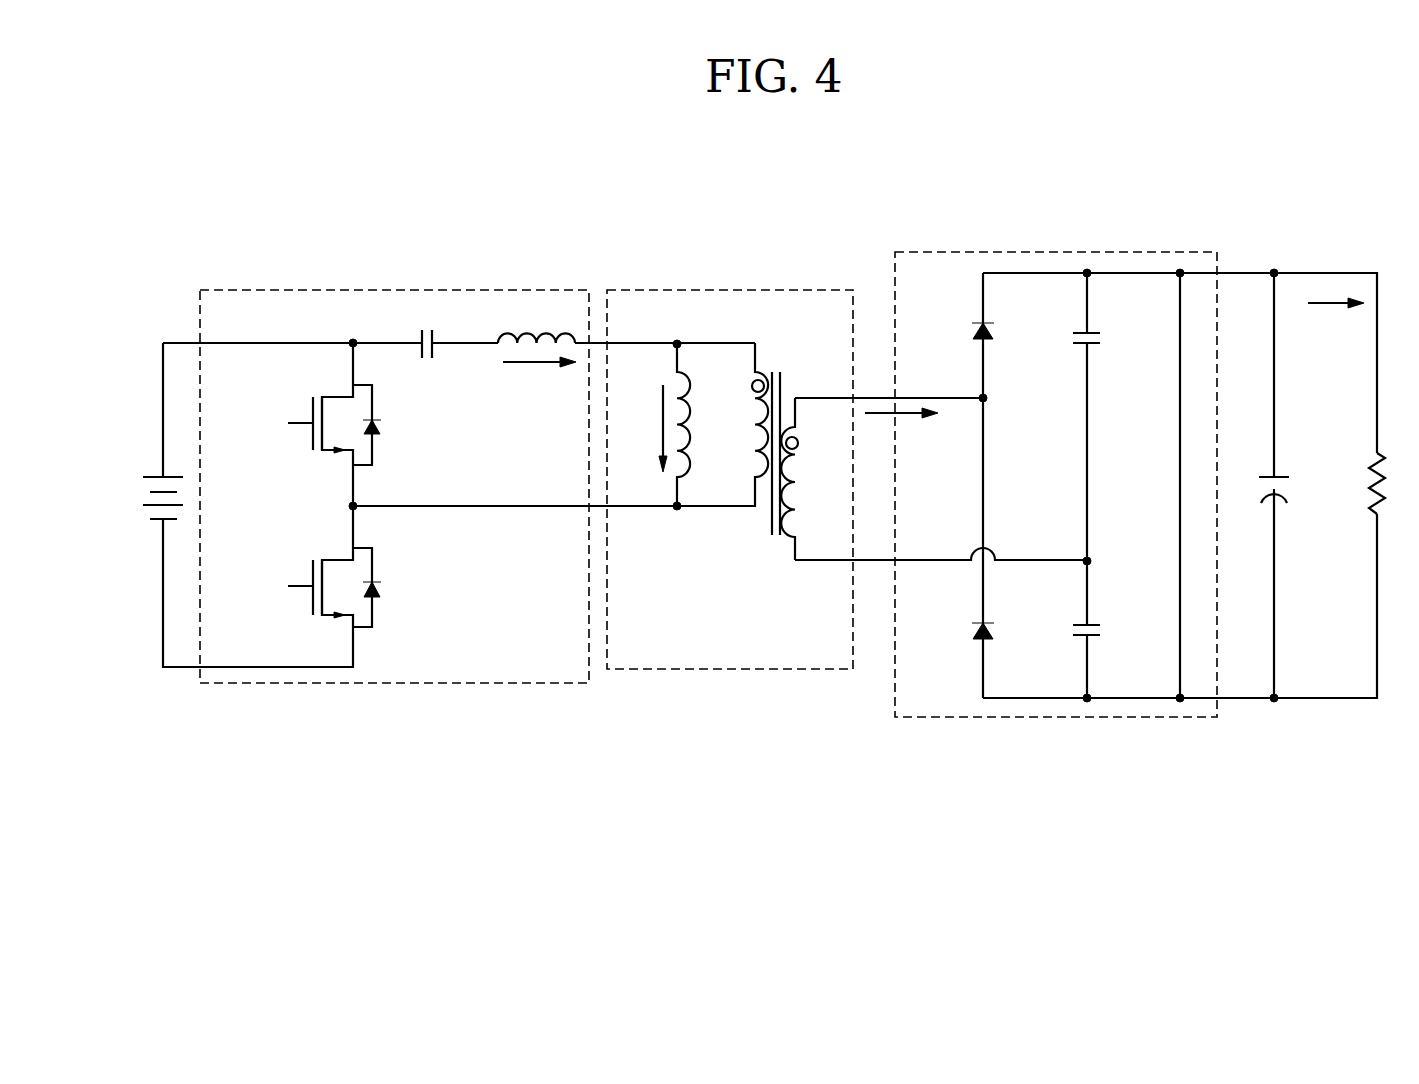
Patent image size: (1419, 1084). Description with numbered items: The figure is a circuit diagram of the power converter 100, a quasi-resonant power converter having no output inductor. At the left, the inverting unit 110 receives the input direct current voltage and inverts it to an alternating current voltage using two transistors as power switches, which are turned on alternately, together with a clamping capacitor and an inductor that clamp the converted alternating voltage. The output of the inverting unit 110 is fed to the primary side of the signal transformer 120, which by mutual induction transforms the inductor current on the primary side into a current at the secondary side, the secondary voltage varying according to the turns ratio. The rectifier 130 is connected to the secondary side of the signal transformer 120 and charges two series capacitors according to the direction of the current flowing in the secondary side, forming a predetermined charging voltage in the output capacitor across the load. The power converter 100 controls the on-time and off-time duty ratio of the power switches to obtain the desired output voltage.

The power converter 100 is at (807, 227).
The inverting unit 110 is at (440, 683).
The signal transformer 120 is at (663, 669).
The rectifier 130 is at (960, 717).